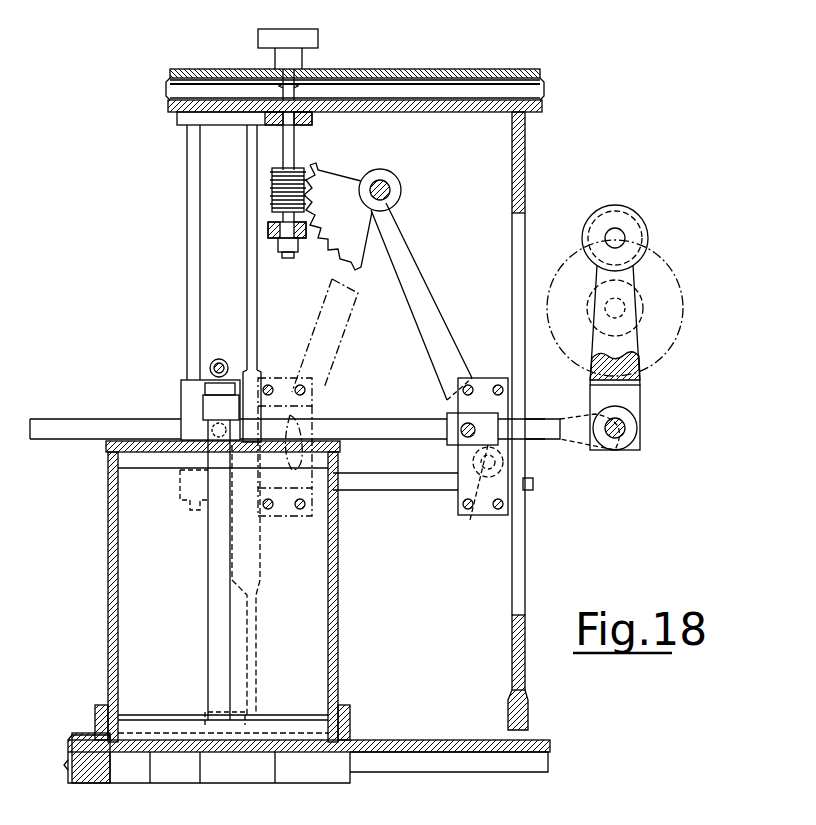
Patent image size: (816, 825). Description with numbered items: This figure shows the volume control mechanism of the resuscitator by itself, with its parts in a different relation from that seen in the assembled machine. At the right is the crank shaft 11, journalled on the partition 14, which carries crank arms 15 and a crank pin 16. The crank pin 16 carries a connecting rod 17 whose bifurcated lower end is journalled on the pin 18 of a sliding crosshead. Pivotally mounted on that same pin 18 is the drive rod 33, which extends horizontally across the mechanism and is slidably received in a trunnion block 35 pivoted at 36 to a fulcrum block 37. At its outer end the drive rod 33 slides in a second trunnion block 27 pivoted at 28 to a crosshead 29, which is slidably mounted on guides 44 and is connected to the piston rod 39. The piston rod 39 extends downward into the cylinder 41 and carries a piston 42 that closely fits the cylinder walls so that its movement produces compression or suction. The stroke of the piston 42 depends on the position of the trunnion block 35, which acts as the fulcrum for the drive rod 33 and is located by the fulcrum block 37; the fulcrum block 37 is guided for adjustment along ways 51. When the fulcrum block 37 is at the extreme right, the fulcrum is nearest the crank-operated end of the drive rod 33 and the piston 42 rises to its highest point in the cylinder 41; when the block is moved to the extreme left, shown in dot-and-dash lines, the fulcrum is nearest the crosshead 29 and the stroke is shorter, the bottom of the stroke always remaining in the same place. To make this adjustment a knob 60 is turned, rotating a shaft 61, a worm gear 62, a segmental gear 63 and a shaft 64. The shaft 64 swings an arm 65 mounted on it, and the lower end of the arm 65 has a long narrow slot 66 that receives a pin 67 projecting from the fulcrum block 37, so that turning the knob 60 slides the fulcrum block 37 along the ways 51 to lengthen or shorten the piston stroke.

The crank shaft 11 is at (627, 308).
The partition 14 is at (526, 162).
The crank arms 15 is at (637, 274).
The crank pin 16 is at (618, 236).
The connecting rod 17 is at (641, 348).
The pin 18 is at (626, 428).
The trunnion block 27 is at (202, 407).
The pivot 28 is at (212, 430).
The crosshead 29 is at (175, 382).
The drive rod 33 is at (52, 420).
The trunnion block 35 is at (474, 462).
The pivot 36 is at (460, 432).
The fulcrum block 37 is at (480, 516).
The piston rod 39 is at (216, 602).
The cylinder 41 is at (110, 550).
The piston 42 is at (150, 716).
The guides 44 is at (192, 224).
The ways 51 is at (378, 491).
The knob 60 is at (312, 38).
The shaft 61 is at (294, 142).
The worm gear 62 is at (300, 172).
The segmental gear 63 is at (343, 186).
The shaft 64 is at (386, 188).
The arm 65 is at (437, 302).
The slot 66 is at (455, 404).
The pin 67 is at (482, 482).